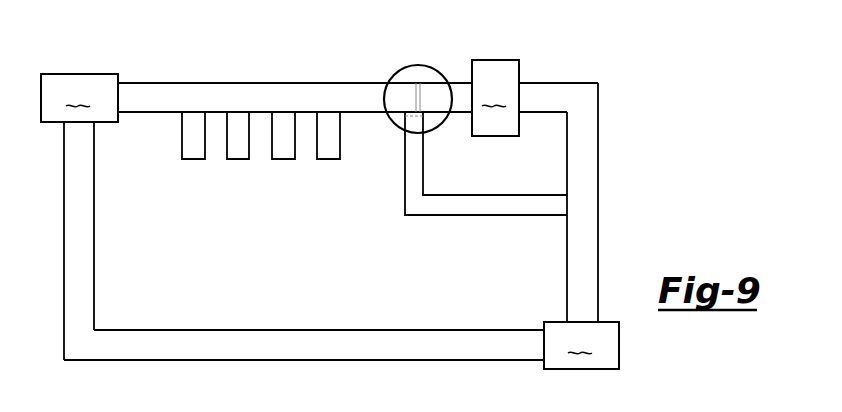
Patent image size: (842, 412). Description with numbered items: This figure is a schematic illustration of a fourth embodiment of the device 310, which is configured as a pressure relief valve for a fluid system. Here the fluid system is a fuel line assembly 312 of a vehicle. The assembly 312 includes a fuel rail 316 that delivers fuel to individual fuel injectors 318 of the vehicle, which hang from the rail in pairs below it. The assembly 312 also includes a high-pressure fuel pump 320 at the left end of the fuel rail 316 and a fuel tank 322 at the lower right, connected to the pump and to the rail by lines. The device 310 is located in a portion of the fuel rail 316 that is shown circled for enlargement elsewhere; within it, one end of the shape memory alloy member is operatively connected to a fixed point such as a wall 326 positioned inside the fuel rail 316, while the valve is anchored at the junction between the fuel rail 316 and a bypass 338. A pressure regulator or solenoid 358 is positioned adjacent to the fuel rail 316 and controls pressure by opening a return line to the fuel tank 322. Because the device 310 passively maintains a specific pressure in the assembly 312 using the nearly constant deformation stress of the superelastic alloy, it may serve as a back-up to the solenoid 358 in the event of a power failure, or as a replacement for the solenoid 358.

The device 310 is at (410, 53).
The fuel line assembly 312 is at (618, 192).
The fuel rail 316 is at (200, 83).
The fuel injectors 318 is at (239, 160).
The high-pressure fuel pump 320 is at (79, 98).
The fuel tank 322 is at (341, 245).
The wall 326 is at (392, 95).
The bypass 338 is at (478, 215).
The pressure regulator or solenoid 358 is at (495, 98).